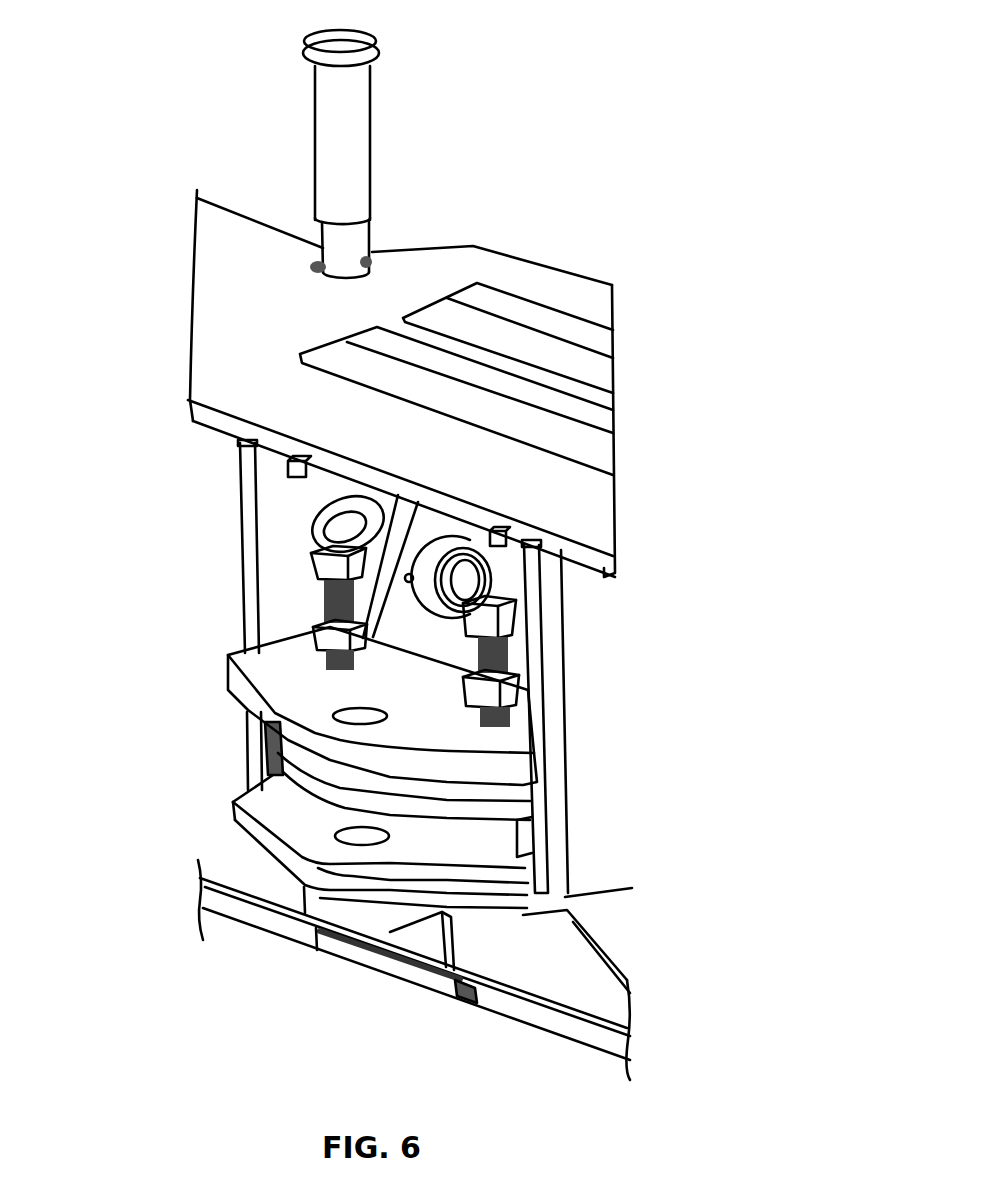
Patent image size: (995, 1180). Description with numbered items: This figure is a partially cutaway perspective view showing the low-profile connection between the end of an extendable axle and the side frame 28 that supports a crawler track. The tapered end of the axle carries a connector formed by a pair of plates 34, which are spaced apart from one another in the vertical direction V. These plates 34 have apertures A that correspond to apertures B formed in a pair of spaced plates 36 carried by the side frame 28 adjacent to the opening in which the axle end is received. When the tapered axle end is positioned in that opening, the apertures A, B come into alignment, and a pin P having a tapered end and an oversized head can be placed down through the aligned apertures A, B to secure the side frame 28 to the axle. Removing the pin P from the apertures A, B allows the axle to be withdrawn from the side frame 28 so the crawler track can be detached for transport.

The pin P is at (372, 130).
The side frame 28 is at (585, 276).
The spaced plates 36 is at (532, 770).
The plates 34 is at (523, 872).
The apertures A is at (335, 835).
The apertures B is at (333, 710).
The vertical direction V is at (112, 600).